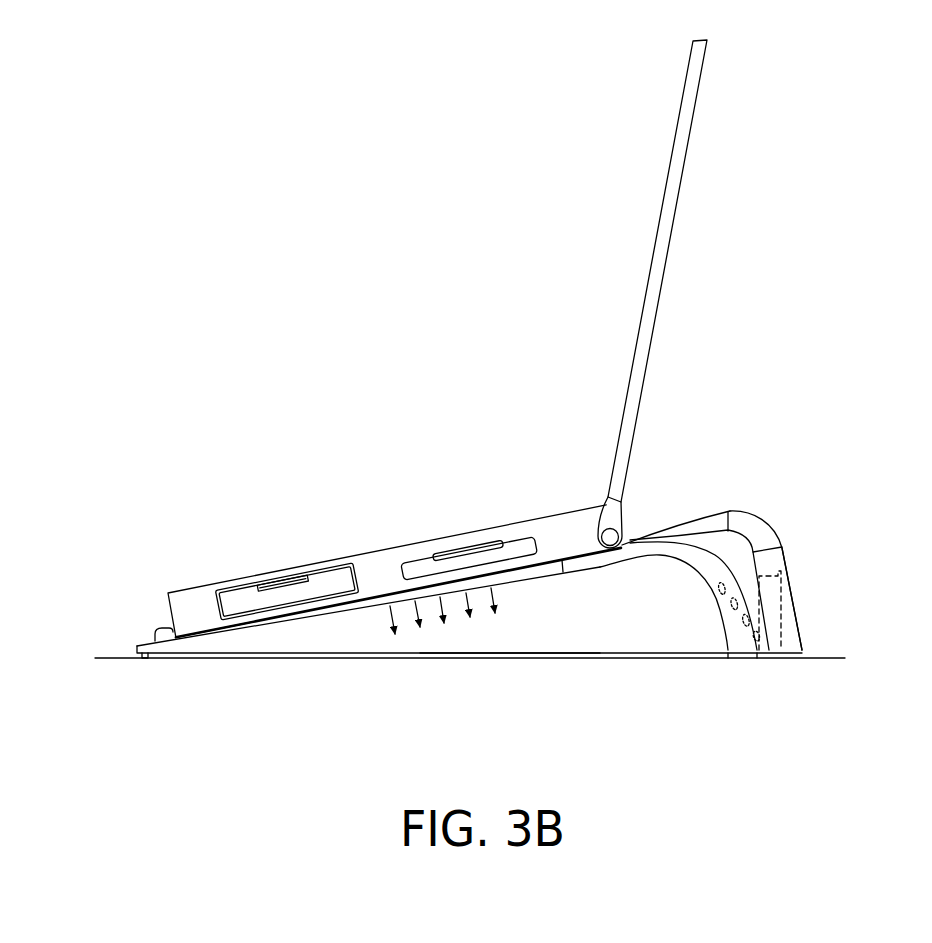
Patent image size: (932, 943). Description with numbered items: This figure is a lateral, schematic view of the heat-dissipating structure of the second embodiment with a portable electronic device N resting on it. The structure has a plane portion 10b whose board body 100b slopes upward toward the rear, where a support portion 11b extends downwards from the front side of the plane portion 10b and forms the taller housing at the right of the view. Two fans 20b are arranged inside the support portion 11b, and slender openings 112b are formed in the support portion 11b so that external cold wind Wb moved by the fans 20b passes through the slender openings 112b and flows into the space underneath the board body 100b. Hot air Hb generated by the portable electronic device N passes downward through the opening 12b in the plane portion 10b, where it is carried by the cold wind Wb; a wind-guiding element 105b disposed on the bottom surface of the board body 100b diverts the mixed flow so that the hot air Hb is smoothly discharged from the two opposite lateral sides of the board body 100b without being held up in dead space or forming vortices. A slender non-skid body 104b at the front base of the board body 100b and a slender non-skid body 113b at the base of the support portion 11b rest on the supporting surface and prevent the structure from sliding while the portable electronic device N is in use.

The portable electronic device N is at (616, 296).
The plane portion 10b is at (283, 624).
The slender non-skid body 104b is at (146, 660).
The opening 12b is at (369, 609).
The board body 100b is at (578, 563).
The wind-guiding element 105b is at (487, 633).
The support portion 11b is at (763, 503).
The fan 20b is at (786, 562).
The slender non-skid body 113b is at (737, 657).
The slender openings 112b is at (800, 658).
The hot air Hb is at (527, 612).
The cold wind Wb is at (868, 623).